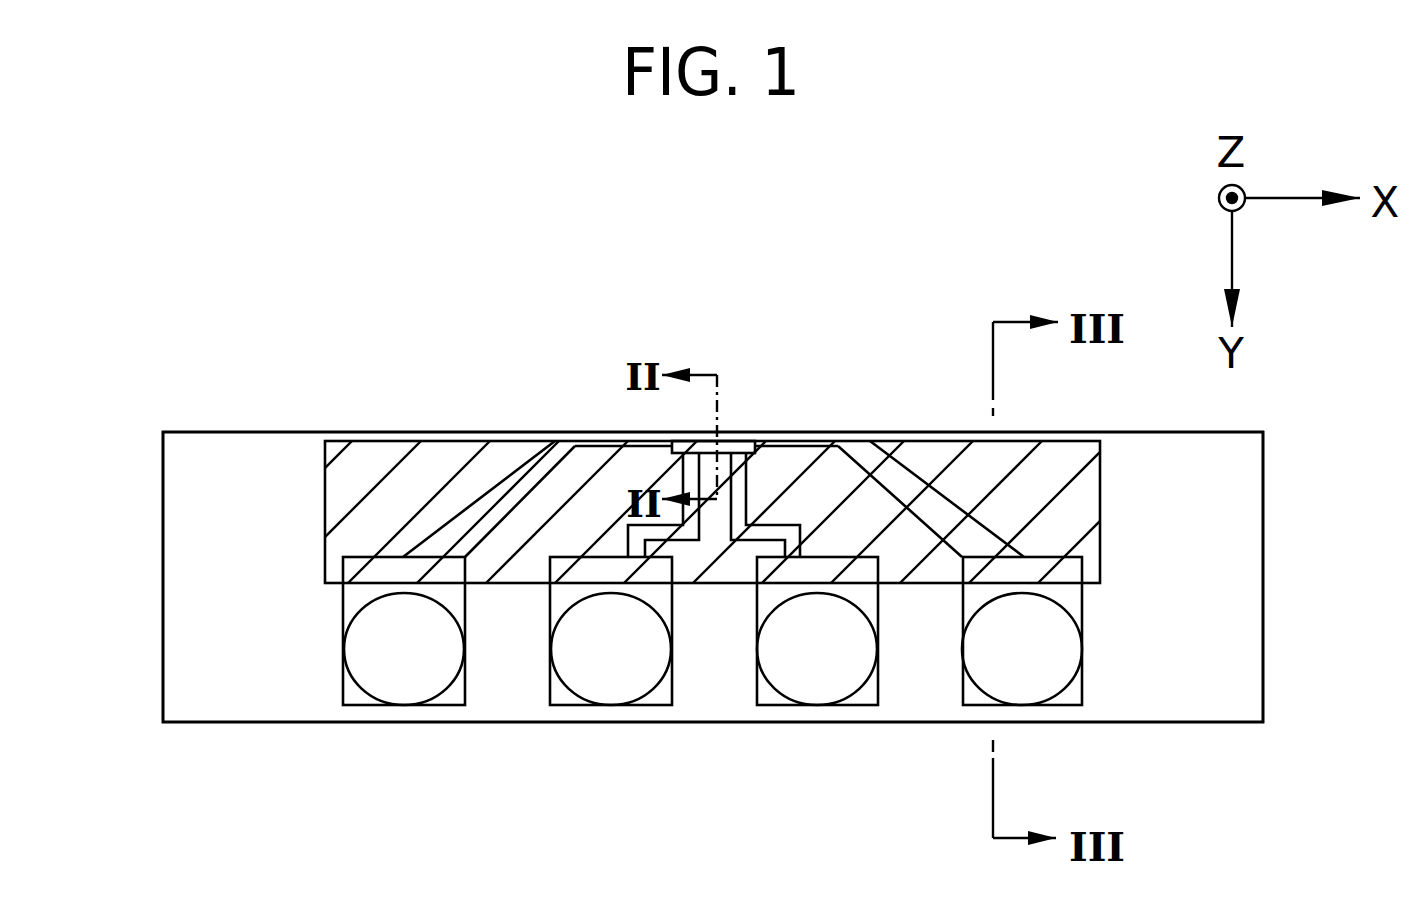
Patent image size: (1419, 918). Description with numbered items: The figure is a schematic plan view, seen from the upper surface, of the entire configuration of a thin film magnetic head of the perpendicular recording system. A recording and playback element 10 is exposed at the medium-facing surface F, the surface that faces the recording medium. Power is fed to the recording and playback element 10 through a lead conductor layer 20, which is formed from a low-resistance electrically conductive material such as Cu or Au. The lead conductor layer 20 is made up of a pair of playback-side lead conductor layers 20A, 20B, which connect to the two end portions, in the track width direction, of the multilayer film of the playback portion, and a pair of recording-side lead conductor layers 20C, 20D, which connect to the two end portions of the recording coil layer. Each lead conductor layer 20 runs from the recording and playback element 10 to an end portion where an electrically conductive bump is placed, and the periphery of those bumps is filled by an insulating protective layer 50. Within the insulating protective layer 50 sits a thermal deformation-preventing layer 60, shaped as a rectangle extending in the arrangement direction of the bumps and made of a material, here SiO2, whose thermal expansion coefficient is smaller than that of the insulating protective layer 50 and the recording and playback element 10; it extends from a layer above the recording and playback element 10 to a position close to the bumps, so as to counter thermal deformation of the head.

The medium-facing surface F is at (245, 431).
The recording and playback element 10 is at (751, 441).
The lead conductor layer 20 is at (763, 430).
The playback-side lead conductor layer 20A is at (485, 505).
The playback-side lead conductor layer 20B is at (925, 485).
The recording-side lead conductor layer 20C is at (620, 522).
The recording-side lead conductor layer 20D is at (803, 543).
The insulating protective layer 50 is at (205, 590).
The thermal deformation-preventing layer 60 is at (1085, 515).